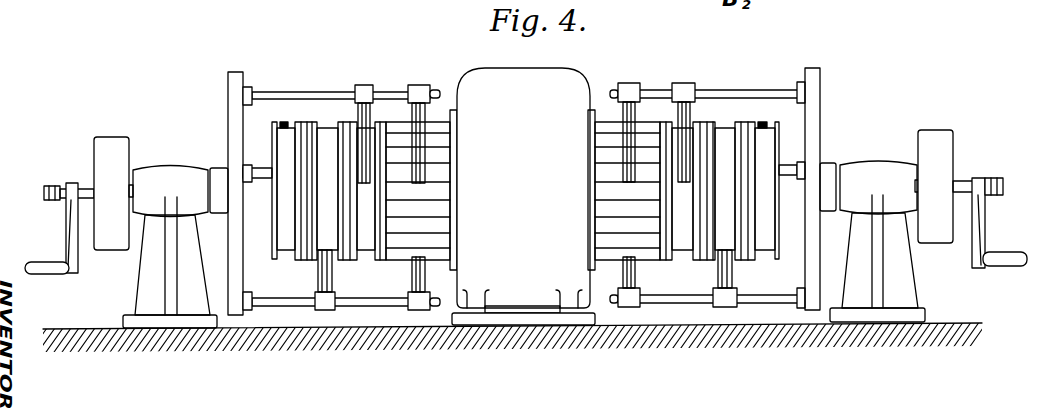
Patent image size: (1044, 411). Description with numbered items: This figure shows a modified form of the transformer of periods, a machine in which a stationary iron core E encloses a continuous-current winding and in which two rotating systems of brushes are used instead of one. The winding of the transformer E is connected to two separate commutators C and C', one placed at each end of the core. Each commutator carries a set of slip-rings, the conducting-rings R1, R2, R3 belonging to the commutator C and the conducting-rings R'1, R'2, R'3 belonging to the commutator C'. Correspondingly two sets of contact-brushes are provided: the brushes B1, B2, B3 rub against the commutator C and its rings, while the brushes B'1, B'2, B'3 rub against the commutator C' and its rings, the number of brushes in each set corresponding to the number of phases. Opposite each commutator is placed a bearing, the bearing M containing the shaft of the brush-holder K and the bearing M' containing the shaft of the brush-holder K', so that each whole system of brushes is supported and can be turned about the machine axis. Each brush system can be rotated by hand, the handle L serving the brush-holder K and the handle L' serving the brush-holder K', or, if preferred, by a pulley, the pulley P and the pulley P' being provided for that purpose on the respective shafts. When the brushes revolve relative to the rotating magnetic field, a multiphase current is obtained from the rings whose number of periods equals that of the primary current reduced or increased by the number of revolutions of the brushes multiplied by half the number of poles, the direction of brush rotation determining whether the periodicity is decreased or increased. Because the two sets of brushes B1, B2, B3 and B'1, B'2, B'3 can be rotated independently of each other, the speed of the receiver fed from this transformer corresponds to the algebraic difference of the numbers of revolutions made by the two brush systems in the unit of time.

The transformer of periods E is at (523, 196).
The commutator C is at (627, 191).
The second commutator C' is at (421, 190).
The conducting-ring R1 is at (685, 240).
The conducting-ring R2 is at (725, 238).
The conducting-ring R3 is at (763, 237).
The conducting-ring R'1 is at (380, 207).
The conducting-ring R'2 is at (339, 207).
The conducting-ring R'3 is at (288, 207).
The contact-brush B1 is at (733, 93).
The contact-brush B2 is at (698, 297).
The contact-brush B3 is at (797, 167).
The contact-brush B'1 is at (341, 125).
The contact-brush B'2 is at (341, 319).
The contact-brush B'3 is at (232, 160).
The brush-holder K is at (823, 189).
The brush-holder K' is at (224, 193).
The bearing M is at (872, 241).
The bearing M' is at (175, 247).
The pulley P is at (934, 186).
The pulley P' is at (113, 193).
The handle L is at (990, 223).
The handle L' is at (59, 228).